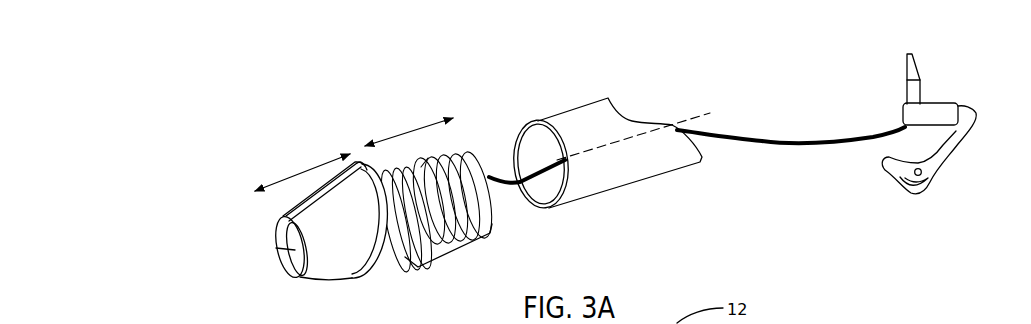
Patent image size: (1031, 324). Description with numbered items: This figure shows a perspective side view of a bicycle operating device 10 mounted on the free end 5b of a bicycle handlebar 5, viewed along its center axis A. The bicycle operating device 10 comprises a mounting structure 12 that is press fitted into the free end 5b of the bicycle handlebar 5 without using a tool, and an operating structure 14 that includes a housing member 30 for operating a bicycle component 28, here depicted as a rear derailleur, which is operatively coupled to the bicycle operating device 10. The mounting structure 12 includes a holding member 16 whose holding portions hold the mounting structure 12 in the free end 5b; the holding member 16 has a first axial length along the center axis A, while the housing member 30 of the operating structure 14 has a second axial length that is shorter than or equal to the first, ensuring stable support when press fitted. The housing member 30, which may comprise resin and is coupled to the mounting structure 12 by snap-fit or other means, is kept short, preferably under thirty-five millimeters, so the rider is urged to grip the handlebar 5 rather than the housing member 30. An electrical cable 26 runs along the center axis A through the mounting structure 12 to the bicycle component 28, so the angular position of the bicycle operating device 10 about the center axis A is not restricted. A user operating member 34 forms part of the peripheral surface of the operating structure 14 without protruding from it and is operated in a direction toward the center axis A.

The bicycle operating device 10 is at (297, 66).
The mounting structure 12 is at (442, 99).
The operating structure 14 is at (234, 177).
The holding member 16 is at (457, 257).
The electrical cable 26 is at (773, 143).
The bicycle component 28 is at (952, 155).
The housing member 30 is at (348, 278).
The user operating member 34 is at (290, 210).
The bicycle handlebar 5 is at (617, 187).
The free end 5b is at (543, 184).